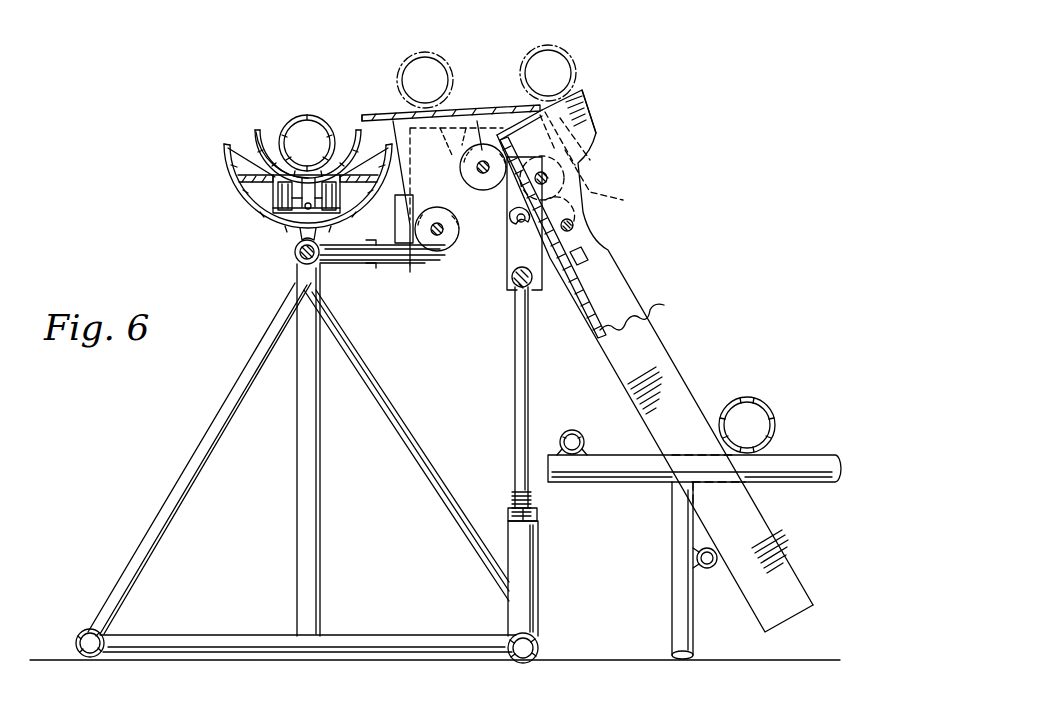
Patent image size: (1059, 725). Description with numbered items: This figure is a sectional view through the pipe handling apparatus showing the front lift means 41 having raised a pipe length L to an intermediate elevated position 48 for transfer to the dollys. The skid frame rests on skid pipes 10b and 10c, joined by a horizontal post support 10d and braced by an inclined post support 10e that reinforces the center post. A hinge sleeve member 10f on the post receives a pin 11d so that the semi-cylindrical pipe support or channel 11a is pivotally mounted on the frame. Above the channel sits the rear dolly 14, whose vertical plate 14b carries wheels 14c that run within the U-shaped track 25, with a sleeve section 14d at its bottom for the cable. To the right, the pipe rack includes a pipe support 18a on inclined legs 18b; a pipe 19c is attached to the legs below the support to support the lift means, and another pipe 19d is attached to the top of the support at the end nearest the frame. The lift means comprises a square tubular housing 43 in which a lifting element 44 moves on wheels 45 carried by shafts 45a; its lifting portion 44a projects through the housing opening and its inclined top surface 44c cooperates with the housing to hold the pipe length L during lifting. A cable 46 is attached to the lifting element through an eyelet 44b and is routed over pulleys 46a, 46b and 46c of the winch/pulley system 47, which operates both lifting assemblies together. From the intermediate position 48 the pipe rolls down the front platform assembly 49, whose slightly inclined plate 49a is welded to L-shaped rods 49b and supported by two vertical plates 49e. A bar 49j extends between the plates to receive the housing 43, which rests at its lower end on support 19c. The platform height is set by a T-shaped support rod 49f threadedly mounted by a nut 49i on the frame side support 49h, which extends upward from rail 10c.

The skid pipe 10b is at (84, 630).
The skid pipe 10c is at (318, 490).
The horizontal post support 10d is at (250, 634).
The inclined post support 10e is at (397, 415).
The hinge sleeve member 10f is at (294, 254).
The pipe support or channel 11a is at (226, 149).
The pin 11d is at (295, 269).
The rear dolly 14 is at (264, 126).
The vertical plate 14b is at (305, 178).
The wheels 14c is at (277, 190).
The sleeve section 14d is at (284, 222).
The pipe support 18a is at (799, 454).
The inclined legs 18b is at (672, 590).
The pipe 19c is at (708, 570).
The pipe 19d is at (568, 431).
The U-shaped track 25 is at (247, 142).
The front lift means 41 is at (655, 361).
The housing 43 is at (655, 308).
The lifting element 44 is at (598, 146).
The lifting portion 44a is at (585, 111).
The eyelet 44b is at (588, 261).
The inclined top surface 44c is at (589, 80).
The wheels 45 is at (590, 192).
The shafts 45a is at (572, 226).
The cable 46 is at (572, 278).
The pulley 46a is at (470, 170).
The pulley 46b is at (371, 263).
The pulley 46c is at (443, 250).
The winch/pulley system 47 is at (410, 276).
The intermediate elevated position 48 is at (575, 36).
The front platform assembly 49 is at (485, 103).
The plate 49a is at (370, 118).
The L-shaped rods 49b is at (448, 193).
The vertical plates 49e is at (508, 245).
The T-shaped support rod 49f is at (514, 345).
The frame side support 49h is at (535, 549).
The nut 49i is at (506, 507).
The bar 49j is at (509, 212).
The pipe length L is at (745, 396).